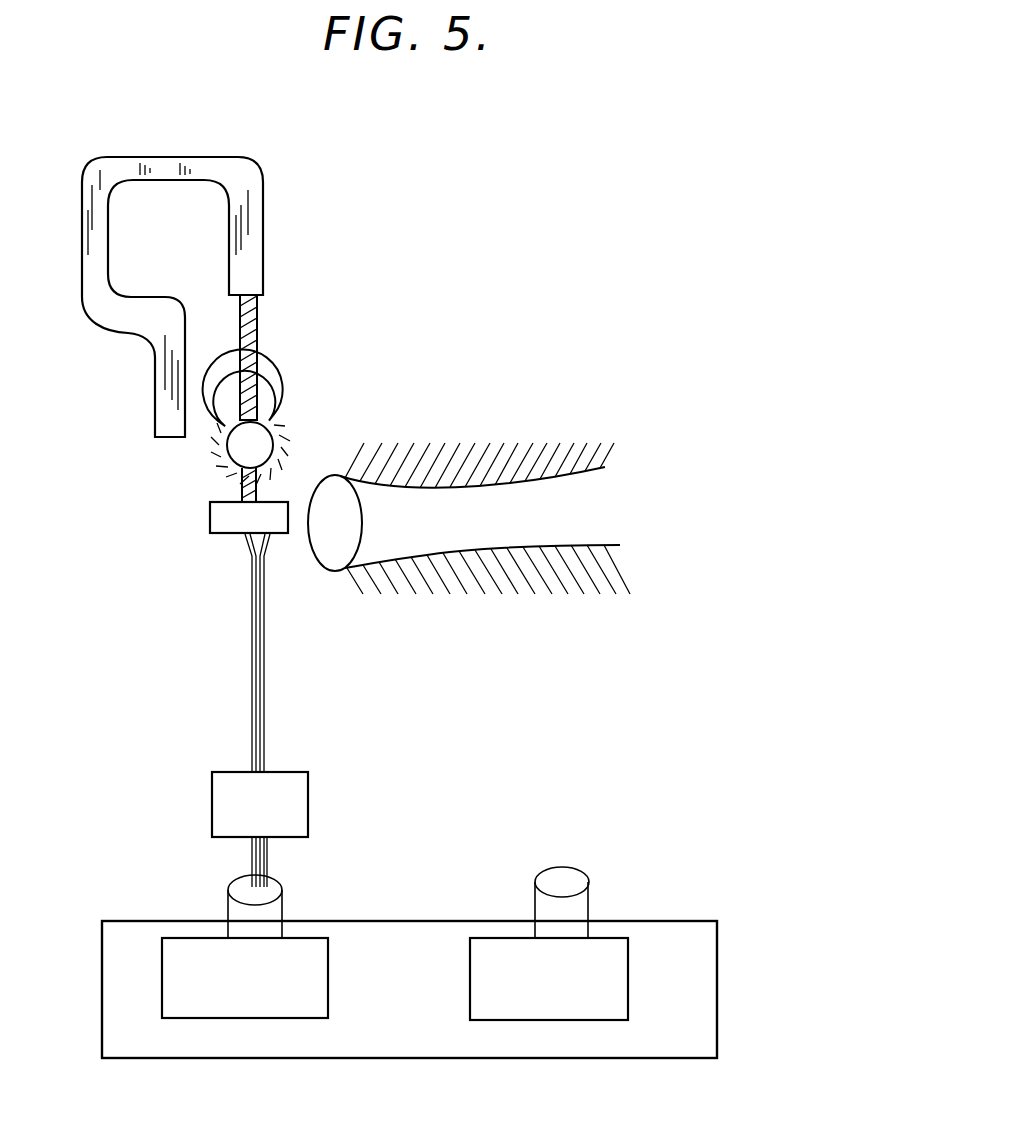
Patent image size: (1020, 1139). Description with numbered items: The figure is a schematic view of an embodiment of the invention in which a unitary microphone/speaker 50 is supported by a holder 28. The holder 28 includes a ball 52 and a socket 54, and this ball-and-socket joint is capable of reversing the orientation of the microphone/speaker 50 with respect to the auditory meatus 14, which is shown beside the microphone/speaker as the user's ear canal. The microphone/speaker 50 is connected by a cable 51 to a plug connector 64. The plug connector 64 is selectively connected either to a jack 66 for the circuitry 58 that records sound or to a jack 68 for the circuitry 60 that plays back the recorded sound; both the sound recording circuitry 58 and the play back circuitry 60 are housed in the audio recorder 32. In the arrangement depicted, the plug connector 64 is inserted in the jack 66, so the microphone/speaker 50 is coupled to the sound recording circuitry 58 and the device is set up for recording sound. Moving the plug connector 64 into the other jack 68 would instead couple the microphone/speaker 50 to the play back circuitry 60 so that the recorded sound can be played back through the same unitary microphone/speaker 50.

The auditory meatus 14 is at (562, 478).
The holder 28 is at (82, 261).
The audio recorder 32 is at (705, 966).
The microphone/speaker 50 is at (213, 525).
The cable 51 is at (266, 704).
The ball 52 is at (261, 433).
The socket 54 is at (288, 448).
The sound recording circuitry 58 is at (162, 968).
The play back circuitry 60 is at (617, 965).
The plug connector 64 is at (268, 864).
The jack 66 is at (238, 885).
The jack 68 is at (584, 875).